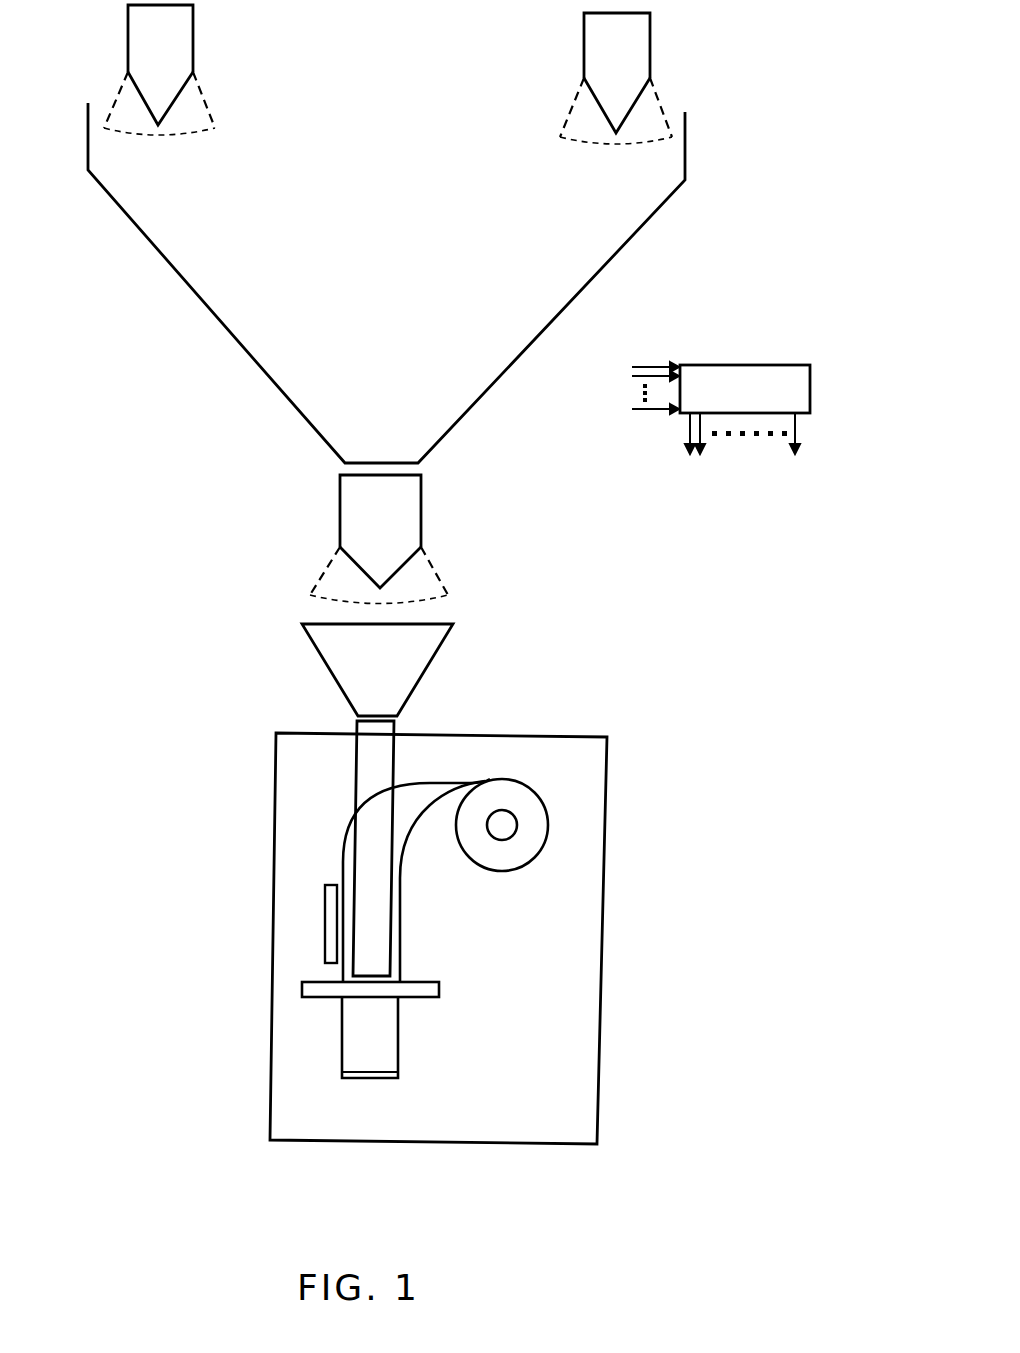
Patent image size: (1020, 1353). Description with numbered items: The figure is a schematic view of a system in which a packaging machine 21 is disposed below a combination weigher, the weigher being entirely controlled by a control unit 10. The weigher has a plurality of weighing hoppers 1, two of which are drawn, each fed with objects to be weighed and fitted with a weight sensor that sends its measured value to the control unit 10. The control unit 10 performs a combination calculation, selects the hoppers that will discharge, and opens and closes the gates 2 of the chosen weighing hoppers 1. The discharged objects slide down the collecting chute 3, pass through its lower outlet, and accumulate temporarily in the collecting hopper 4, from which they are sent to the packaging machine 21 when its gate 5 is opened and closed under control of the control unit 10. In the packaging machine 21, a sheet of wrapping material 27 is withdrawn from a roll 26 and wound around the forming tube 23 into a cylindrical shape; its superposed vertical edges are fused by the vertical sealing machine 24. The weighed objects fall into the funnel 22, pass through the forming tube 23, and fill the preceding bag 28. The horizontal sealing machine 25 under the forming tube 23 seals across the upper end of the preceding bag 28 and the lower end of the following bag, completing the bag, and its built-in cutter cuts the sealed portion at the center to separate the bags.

The weighing hopper 1 is at (193, 24).
The gate 2 is at (176, 100).
The collecting chute 3 is at (617, 252).
The collecting hopper 4 is at (421, 505).
The gate 5 is at (392, 575).
The control unit 10 is at (745, 365).
The packaging machine 21 is at (643, 737).
The funnel 22 is at (422, 678).
The forming tube 23 is at (357, 771).
The vertical sealing machine 24 is at (325, 926).
The horizontal sealing machine 25 is at (313, 980).
The roll 26 is at (548, 826).
The wrapping material 27 is at (462, 785).
The preceding bag 28 is at (342, 1033).